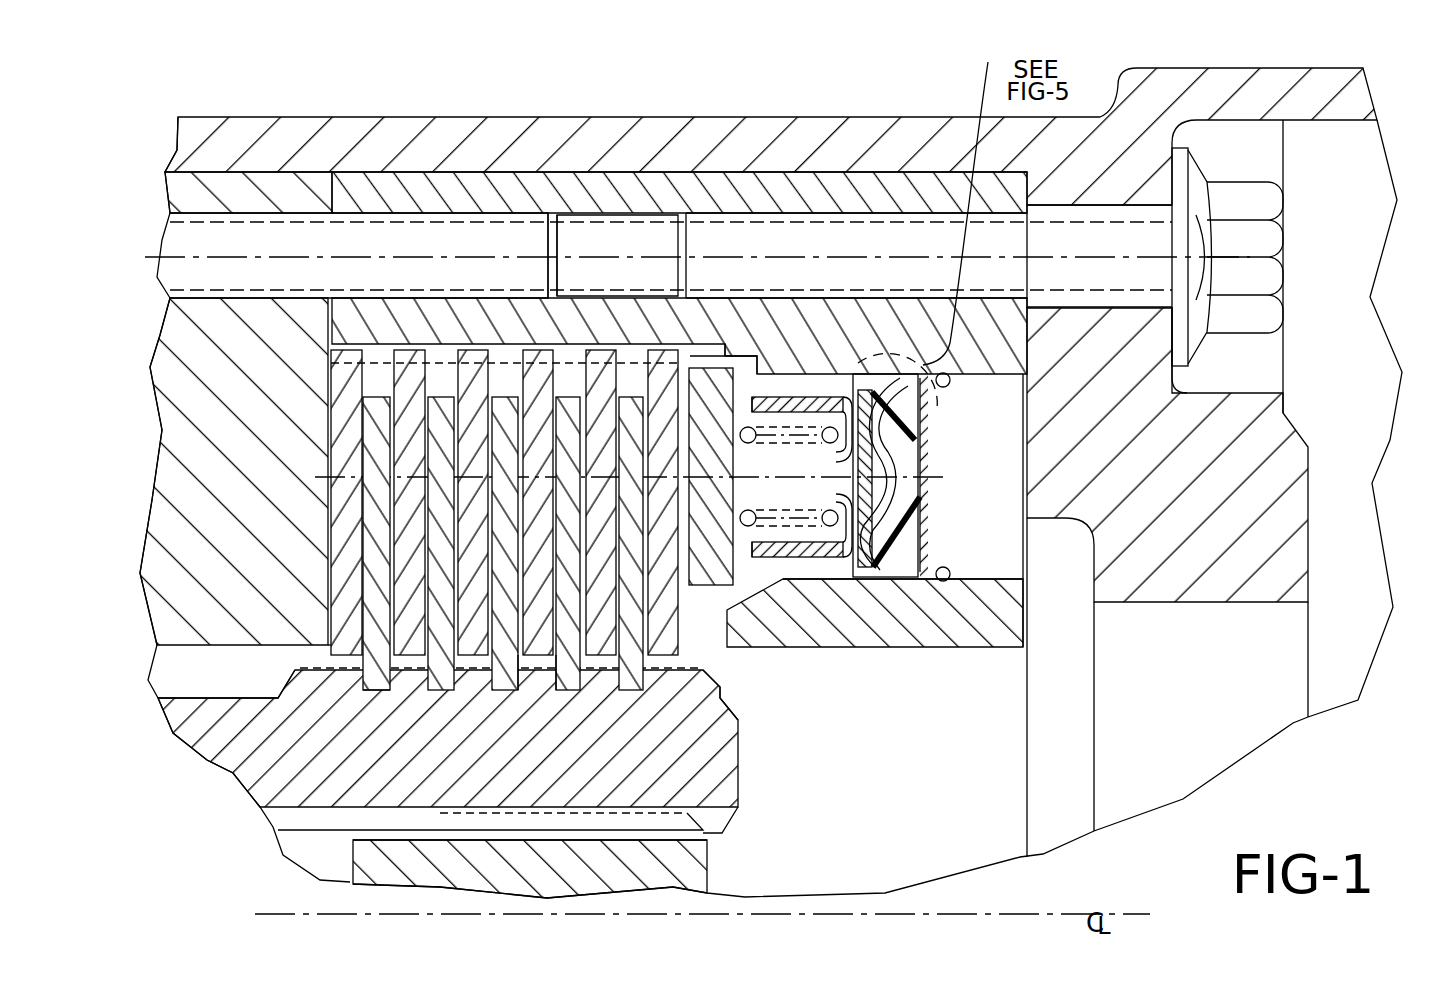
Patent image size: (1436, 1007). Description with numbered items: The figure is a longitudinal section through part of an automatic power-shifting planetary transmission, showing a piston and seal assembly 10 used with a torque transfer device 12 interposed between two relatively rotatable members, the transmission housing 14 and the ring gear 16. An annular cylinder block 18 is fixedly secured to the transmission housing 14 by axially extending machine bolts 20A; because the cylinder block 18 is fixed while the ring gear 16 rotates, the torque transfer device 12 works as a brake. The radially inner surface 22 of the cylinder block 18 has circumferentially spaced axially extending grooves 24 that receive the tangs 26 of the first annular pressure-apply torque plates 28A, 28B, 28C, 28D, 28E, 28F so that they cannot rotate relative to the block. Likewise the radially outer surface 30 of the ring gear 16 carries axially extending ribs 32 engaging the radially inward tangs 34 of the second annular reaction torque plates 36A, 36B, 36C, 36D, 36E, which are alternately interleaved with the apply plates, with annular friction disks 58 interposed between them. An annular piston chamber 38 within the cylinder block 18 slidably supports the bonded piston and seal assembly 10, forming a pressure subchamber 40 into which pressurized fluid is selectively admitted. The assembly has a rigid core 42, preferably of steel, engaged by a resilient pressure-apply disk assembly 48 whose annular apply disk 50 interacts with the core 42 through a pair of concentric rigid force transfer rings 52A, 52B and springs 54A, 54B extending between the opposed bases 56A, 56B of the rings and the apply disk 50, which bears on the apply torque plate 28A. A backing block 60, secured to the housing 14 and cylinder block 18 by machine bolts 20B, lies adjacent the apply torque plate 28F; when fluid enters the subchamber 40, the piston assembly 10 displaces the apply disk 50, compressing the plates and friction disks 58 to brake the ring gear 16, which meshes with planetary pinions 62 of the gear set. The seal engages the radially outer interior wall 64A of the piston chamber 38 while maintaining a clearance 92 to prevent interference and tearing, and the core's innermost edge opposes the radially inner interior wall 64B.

The piston and seal assembly 10 is at (905, 594).
The torque transfer device 12 is at (335, 673).
The transmission housing 14 is at (1262, 440).
The ring gear 16 is at (225, 733).
The annular cylinder block 18 is at (640, 198).
The machine bolts 20A is at (925, 243).
The machine bolts 20B is at (242, 242).
The radially inner surface 22 is at (732, 343).
The axially extending grooves 24 is at (698, 352).
The tangs 26 is at (336, 350).
The pressure-apply torque plate 28A is at (665, 370).
The pressure-apply torque plate 28B is at (602, 370).
The pressure-apply torque plate 28C is at (535, 370).
The pressure-apply torque plate 28D is at (472, 370).
The pressure-apply torque plate 28E is at (410, 370).
The pressure-apply torque plate 28F is at (352, 368).
The radially outer surface 30 is at (216, 694).
The axially extending ribs 32 is at (683, 690).
The tangs 34 is at (432, 683).
The reaction torque plate 36A is at (630, 690).
The reaction torque plate 36B is at (574, 690).
The reaction torque plate 36C is at (506, 690).
The reaction torque plate 36D is at (452, 690).
The reaction torque plate 36E is at (378, 690).
The annular piston chamber 38 is at (758, 572).
The pressure subchamber 40 is at (937, 550).
The rigid core 42 is at (867, 462).
The resilient pressure-apply disk assembly 48 is at (817, 378).
The annular apply disk 50 is at (787, 373).
The rigid force transfer ring 52A is at (815, 386).
The rigid force transfer ring 52B is at (807, 552).
The spring 54A is at (750, 447).
The spring 54B is at (752, 518).
The base 56A is at (866, 421).
The base 56B is at (855, 530).
The annular friction disks 58 is at (553, 650).
The backing block 60 is at (190, 400).
The planetary pinions 62 is at (683, 868).
The radially outer interior wall 64A is at (947, 384).
The radially inner interior wall 64B is at (948, 576).
The clearance 92 is at (862, 582).